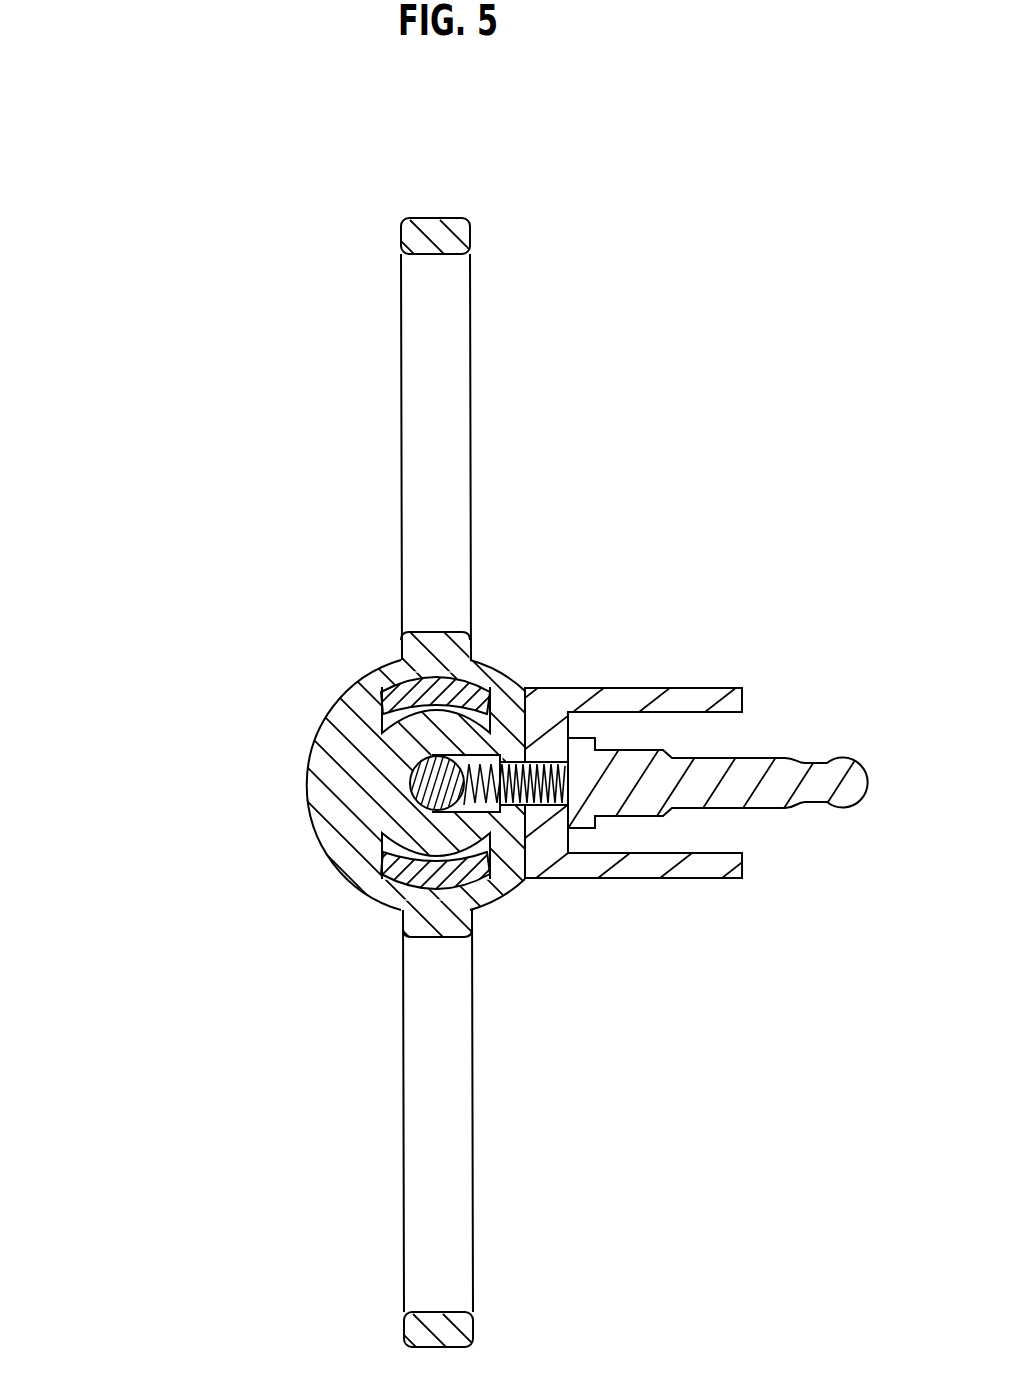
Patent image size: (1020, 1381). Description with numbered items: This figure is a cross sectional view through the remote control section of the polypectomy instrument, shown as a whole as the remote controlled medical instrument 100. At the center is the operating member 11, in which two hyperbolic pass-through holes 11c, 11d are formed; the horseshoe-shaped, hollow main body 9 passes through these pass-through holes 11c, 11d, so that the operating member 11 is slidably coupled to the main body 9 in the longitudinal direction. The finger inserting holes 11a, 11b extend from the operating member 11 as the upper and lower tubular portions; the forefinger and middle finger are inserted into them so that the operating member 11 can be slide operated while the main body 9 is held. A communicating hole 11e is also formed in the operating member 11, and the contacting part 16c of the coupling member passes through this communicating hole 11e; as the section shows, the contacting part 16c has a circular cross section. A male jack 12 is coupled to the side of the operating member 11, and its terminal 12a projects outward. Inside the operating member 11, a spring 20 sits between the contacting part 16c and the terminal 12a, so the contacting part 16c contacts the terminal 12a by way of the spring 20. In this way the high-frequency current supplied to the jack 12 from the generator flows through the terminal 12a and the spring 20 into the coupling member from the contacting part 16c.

The connector assembly 100 is at (188, 355).
The operating member 11 is at (303, 783).
The finger inserting hole 11a is at (445, 467).
The finger inserting hole 11b is at (448, 1143).
The pass-through hole 11c is at (380, 698).
The pass-through hole 11d is at (392, 853).
The communicating hole 11e is at (403, 755).
The main body 9 is at (473, 688).
The contacting part 16c is at (425, 792).
The spring 20 is at (528, 787).
The male jack 12 is at (698, 687).
The terminal 12a is at (753, 757).